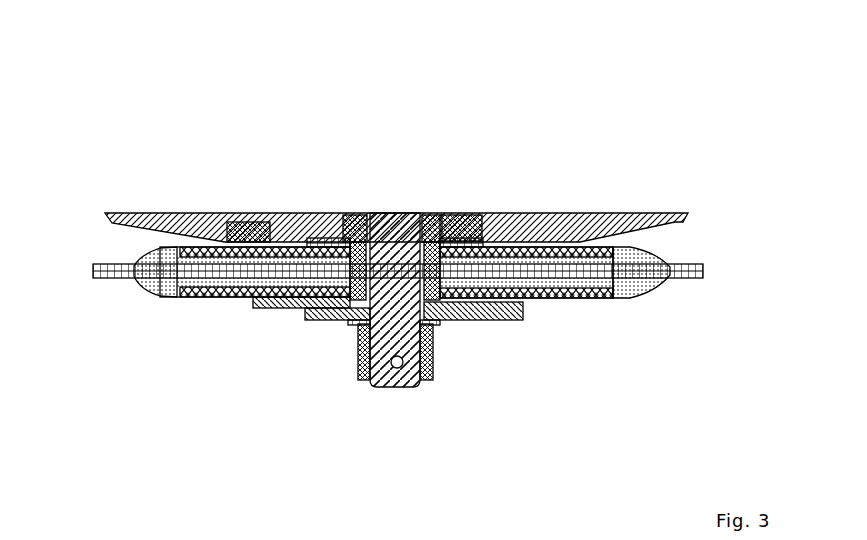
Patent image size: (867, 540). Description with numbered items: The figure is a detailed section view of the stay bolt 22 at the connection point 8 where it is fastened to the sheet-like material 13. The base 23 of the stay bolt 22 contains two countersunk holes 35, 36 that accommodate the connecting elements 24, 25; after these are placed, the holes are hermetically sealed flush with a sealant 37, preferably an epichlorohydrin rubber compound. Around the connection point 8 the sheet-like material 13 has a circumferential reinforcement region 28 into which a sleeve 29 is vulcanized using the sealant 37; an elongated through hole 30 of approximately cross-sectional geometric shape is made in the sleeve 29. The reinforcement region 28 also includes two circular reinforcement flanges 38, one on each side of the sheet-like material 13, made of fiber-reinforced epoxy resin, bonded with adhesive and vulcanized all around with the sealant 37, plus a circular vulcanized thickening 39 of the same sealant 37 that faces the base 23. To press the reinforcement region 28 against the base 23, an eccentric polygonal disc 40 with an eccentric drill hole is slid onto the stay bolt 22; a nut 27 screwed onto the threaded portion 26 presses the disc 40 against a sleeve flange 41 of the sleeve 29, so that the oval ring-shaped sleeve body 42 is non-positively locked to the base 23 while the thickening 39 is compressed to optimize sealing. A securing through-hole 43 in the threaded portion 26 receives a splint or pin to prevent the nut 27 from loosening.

The connection point 8 is at (462, 80).
The sheet-like material 13 is at (92, 267).
The stay bolt 22 is at (396, 348).
The base 23 is at (392, 213).
The connecting element 24 is at (252, 215).
The connecting element 25 is at (533, 215).
The threaded portion 26 is at (384, 389).
The nut 27 is at (358, 353).
The reinforcement region 28 is at (193, 312).
The sleeve 29 is at (533, 312).
The elongated through hole 30 is at (419, 215).
The countersunk hole 35 is at (222, 215).
The countersunk hole 36 is at (510, 215).
The sealant 37 is at (262, 215).
The reinforcement flange 38 is at (180, 213).
The thickening 39 is at (330, 215).
The eccentric polygonal disc 40 is at (310, 320).
The sleeve flange 41 is at (265, 308).
The sleeve body 42 is at (447, 322).
The securing through-hole 43 is at (406, 388).